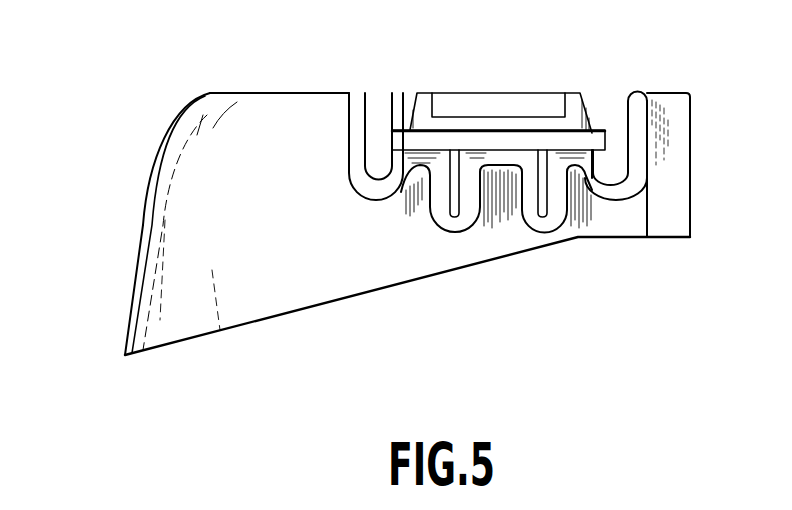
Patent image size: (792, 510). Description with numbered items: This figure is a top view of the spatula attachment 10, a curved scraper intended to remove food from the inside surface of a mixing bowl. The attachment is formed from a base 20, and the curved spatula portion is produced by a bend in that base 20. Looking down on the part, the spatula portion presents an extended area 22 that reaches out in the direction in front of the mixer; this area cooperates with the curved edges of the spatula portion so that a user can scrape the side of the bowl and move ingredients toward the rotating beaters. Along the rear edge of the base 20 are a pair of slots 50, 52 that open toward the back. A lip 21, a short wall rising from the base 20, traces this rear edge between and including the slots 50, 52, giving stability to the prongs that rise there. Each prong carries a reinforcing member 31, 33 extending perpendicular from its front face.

The spatula attachment 10 is at (128, 86).
The base 20 is at (317, 307).
The extended area 22 is at (263, 290).
The slot 50 is at (388, 110).
The slot 52 is at (615, 110).
The lip 21 is at (647, 158).
The reinforcing member 31 is at (453, 217).
The reinforcing member 33 is at (545, 217).